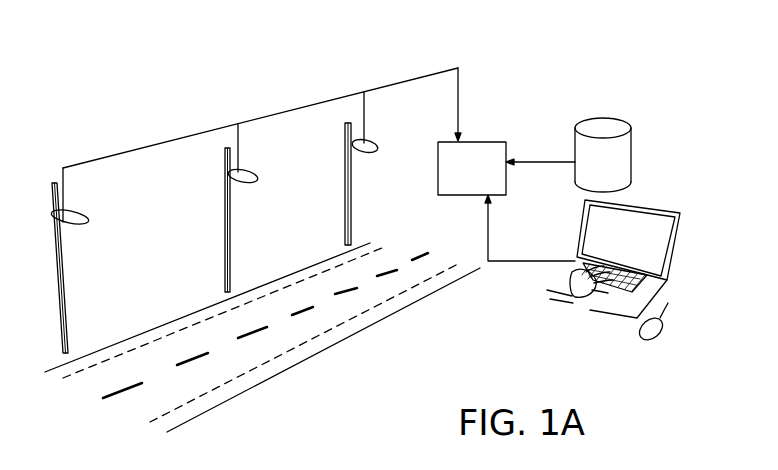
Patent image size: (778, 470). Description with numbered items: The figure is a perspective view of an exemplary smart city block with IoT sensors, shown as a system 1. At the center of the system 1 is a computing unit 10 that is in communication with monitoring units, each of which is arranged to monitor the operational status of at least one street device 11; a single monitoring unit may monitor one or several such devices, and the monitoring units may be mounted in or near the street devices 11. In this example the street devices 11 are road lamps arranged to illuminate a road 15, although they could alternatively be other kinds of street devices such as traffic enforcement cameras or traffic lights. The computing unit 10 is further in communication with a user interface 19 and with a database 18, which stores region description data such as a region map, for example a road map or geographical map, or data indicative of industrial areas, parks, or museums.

The system 1 is at (498, 76).
The computing unit 10 is at (497, 141).
The street device 11 is at (88, 211).
The road 15 is at (320, 355).
The database 18 is at (632, 143).
The user interface 19 is at (622, 318).